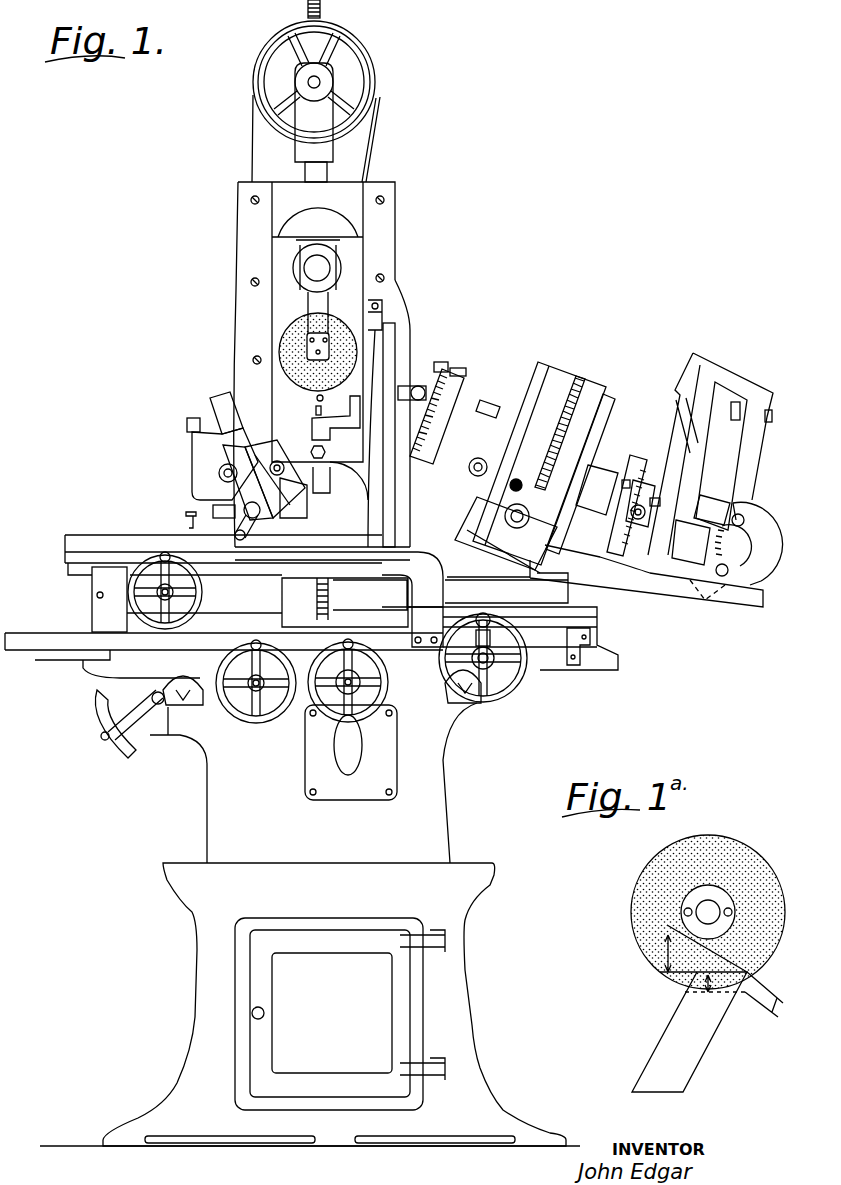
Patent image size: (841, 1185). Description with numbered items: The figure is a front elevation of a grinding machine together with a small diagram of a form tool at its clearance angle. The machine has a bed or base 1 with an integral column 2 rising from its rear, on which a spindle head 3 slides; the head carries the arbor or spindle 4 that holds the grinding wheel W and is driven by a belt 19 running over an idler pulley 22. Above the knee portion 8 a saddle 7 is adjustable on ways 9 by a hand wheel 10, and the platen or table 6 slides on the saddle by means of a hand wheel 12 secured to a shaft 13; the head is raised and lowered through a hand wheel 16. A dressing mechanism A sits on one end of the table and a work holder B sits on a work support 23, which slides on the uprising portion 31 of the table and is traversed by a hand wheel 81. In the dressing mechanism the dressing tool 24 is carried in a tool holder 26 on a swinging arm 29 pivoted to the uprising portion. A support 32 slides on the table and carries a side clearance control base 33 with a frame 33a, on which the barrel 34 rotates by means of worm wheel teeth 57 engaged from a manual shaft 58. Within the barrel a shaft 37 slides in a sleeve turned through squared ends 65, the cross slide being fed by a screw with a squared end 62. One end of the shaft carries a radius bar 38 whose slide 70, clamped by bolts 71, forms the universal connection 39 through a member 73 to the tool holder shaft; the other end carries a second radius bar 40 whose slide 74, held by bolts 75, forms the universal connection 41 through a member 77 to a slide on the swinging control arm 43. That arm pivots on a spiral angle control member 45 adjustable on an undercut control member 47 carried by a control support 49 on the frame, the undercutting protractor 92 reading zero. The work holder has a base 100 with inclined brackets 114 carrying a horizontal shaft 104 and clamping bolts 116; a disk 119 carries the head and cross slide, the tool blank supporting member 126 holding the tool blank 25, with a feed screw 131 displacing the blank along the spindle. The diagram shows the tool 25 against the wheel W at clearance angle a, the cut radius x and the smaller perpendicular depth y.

In FIG. 1, the bed or base 1 is at (450, 820).
In FIG. 1, the column 2 is at (397, 285).
In FIG. 1, the spindle head 3 is at (357, 258).
In FIG. 1A, the arbor or spindle 4 is at (712, 908).
In FIG. 1, the platen or table 6 is at (35, 633).
In FIG. 1, the saddle 7 is at (115, 670).
In FIG. 1, the knee portion 8 is at (425, 712).
In FIG. 1, the ways 9 is at (190, 705).
In FIG. 1, the hand wheel 10 is at (258, 722).
In FIG. 1, the hand wheel 12 is at (520, 690).
In FIG. 1, the shaft 13 is at (480, 695).
In FIG. 1, the hand wheel 16 is at (330, 720).
In FIG. 1, the belt 19 is at (372, 148).
In FIG. 1, the idler pulley 22 is at (352, 60).
In FIG. 1, the work support 23 is at (138, 545).
In FIG. 1, the dressing tool 24 is at (316, 410).
In FIG. 1, the tool blank 25 is at (208, 410).
In FIG. 1A, the tool blank 25 is at (660, 1050).
In FIG. 1, the tool holder 26 is at (340, 420).
In FIG. 1, the swinging head or arm 29 is at (393, 335).
In FIG. 1, the uprising portion 31 is at (260, 560).
In FIG. 1, the support 32 is at (600, 612).
In FIG. 1, the side clearance control base 33 is at (568, 592).
In FIG. 1, the frame 33a is at (668, 603).
In FIG. 1, the annular member or barrel 34 is at (595, 390).
In FIG. 1, the shaft 37 is at (592, 485).
In FIG. 1, the head, guide or radius bar 38 is at (462, 375).
In FIG. 1, the universal connection 39 is at (420, 385).
In FIG. 1, the second radius bar 40 is at (640, 482).
In FIG. 1, the universal connection 41 is at (658, 498).
In FIG. 1, the swinging control arm 43 is at (709, 454).
In FIG. 1, the spiral angle control member 45 is at (730, 445).
In FIG. 1, the undercut control member 47 is at (712, 505).
In FIG. 1, the control support 49 is at (757, 530).
In FIG. 1, the worm wheel teeth 57 is at (572, 378).
In FIG. 1, the manually operable shaft 58 is at (505, 497).
In FIG. 1, the squared outer end 62 is at (516, 480).
In FIG. 1, the squared outer ends 65 is at (469, 466).
In FIG. 1, the slide 70 is at (460, 368).
In FIG. 1, the clamping bolts 71 is at (445, 364).
In FIG. 1, the member of universal joint 73 is at (392, 400).
In FIG. 1, the slide 74 is at (645, 505).
In FIG. 1, the bolts 75 is at (628, 490).
In FIG. 1, the member of universal joint 77 is at (640, 550).
In FIG. 1, the hand wheel 81 is at (178, 540).
In FIG. 1, the protractor 92 is at (746, 540).
In FIG. 1, the base 100 is at (213, 535).
In FIG. 1, the horizontal shaft 104 is at (253, 550).
In FIG. 1, the inclined brackets 114 is at (300, 490).
In FIG. 1, the clamping bolts 116 is at (255, 470).
In FIG. 1, the centrally apertured disk 119 is at (262, 455).
In FIG. 1, the tool blank supporting member 126 is at (200, 455).
In FIG. 1, the feed screw 131 is at (220, 470).
In FIG. 1, the grinding wheel W is at (278, 345).
In FIG. 1A, the grinding wheel W is at (640, 900).
In FIG. 1, the dressing mechanism A is at (609, 358).
In FIG. 1, the tool blank or work holder B is at (183, 462).
In FIG. 1A, the clearance angle a is at (663, 953).
In FIG. 1A, the depth or radius of cut x is at (780, 1005).
In FIG. 1A, the depth perpendicular to clearance end y is at (700, 990).